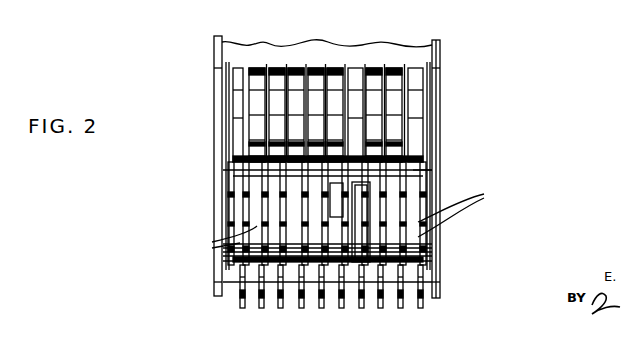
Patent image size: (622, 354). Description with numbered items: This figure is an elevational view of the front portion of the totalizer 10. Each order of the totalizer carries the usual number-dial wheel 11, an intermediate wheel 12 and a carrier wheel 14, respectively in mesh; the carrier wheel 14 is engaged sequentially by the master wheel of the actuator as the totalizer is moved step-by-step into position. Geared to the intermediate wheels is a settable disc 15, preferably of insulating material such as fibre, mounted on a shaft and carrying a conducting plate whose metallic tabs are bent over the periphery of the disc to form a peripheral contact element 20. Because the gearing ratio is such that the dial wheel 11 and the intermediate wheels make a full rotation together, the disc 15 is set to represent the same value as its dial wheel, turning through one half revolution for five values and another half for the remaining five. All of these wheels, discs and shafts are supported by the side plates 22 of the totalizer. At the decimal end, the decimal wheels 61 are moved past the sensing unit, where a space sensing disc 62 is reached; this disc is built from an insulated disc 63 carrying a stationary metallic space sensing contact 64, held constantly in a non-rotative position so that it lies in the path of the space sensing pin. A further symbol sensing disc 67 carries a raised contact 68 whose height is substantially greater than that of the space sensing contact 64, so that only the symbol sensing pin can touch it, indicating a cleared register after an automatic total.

The totalizer 10 is at (262, 56).
The number-dial wheel 11 is at (233, 125).
The intermediate wheel 12 is at (240, 168).
The carrier wheel 14 is at (246, 300).
The disc 15 is at (240, 256).
The peripheral contact element 20 is at (236, 192).
The side plate 22 is at (216, 216).
The decimal wheel 61 is at (375, 72).
The space sensing disc 62 is at (418, 240).
The insulated disc 63 is at (370, 268).
The space sensing contact 64 is at (412, 170).
The symbol sensing disc 67 is at (418, 204).
The raised contact 68 is at (436, 162).